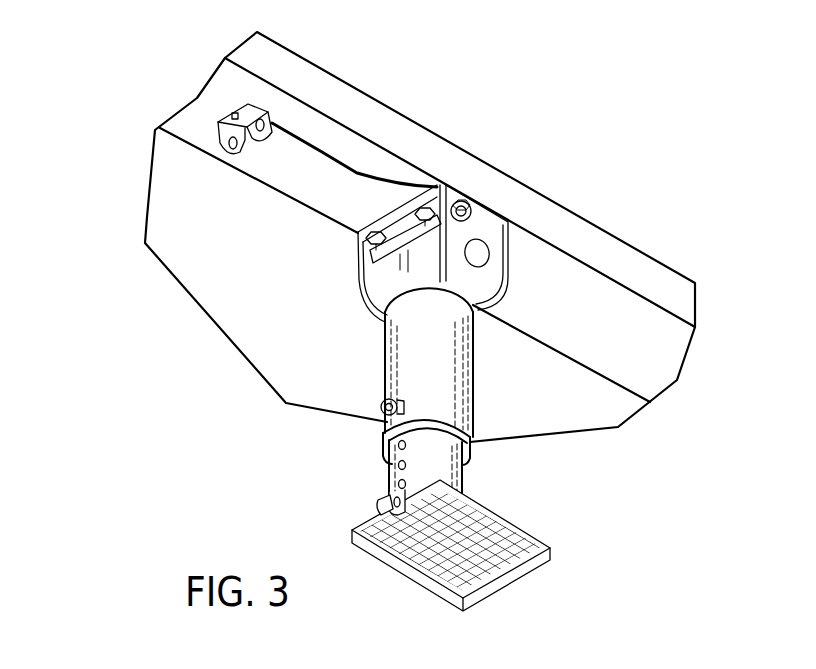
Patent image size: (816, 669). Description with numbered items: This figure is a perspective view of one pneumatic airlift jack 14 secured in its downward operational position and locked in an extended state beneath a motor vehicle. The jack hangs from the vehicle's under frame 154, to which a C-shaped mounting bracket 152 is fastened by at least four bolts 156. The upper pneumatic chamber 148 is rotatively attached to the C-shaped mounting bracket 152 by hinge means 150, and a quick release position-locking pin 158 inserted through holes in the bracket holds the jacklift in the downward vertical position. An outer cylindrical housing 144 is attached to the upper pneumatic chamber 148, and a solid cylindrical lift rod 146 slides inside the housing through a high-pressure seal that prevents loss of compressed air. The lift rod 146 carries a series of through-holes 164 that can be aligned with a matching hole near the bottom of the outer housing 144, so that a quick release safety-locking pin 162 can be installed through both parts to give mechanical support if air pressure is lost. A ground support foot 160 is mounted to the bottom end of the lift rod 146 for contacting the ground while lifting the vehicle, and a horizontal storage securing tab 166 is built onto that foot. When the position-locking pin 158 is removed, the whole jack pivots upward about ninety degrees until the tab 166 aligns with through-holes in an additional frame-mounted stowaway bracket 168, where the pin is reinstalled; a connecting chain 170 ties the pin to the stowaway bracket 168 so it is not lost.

The pneumatic airlift jack 14 is at (453, 221).
The outer cylindrical housing 144 is at (430, 386).
The solid cylindrical lift rod 146 is at (354, 480).
The upper pneumatic chamber 148 is at (391, 214).
The hinge means 150 is at (482, 262).
The C-shaped mounting bracket 152 is at (508, 232).
The under frame 154 is at (350, 85).
The bolts 156 is at (358, 262).
The quick release position-locking pin 158 is at (468, 204).
The ground support foot 160 is at (553, 548).
The quick release safety-locking pin 162 is at (380, 404).
The through-holes 164 is at (398, 447).
The horizontal storage securing tab 166 is at (376, 503).
The stowaway bracket 168 is at (219, 128).
The connecting chain 170 is at (322, 152).